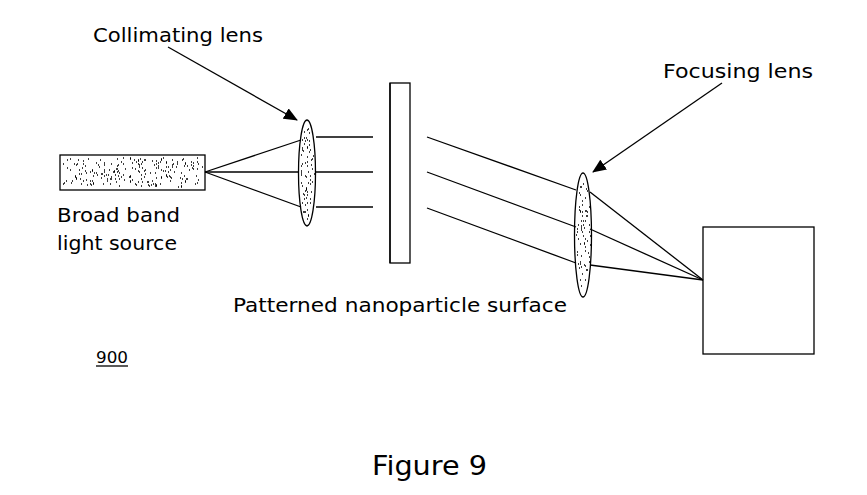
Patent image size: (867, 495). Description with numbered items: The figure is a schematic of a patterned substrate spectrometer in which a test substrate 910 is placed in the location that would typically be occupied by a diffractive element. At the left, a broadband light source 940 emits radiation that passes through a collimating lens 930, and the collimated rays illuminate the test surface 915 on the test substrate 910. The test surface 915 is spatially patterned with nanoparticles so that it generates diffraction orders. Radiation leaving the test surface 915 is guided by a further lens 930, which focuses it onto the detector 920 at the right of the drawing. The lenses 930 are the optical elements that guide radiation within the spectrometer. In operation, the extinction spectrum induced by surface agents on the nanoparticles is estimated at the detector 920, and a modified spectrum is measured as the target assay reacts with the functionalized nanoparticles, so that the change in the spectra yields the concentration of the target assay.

The test substrate 910 is at (410, 82).
The test surface 915 is at (390, 107).
The detector 920 is at (814, 226).
The collimating lens 930 is at (315, 230).
The broadband light source 940 is at (59, 153).